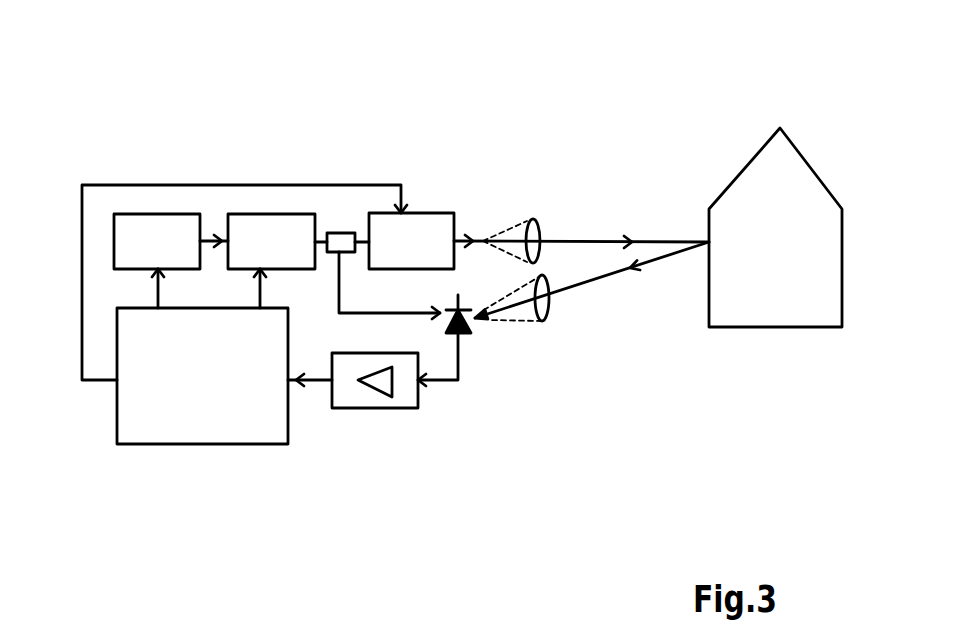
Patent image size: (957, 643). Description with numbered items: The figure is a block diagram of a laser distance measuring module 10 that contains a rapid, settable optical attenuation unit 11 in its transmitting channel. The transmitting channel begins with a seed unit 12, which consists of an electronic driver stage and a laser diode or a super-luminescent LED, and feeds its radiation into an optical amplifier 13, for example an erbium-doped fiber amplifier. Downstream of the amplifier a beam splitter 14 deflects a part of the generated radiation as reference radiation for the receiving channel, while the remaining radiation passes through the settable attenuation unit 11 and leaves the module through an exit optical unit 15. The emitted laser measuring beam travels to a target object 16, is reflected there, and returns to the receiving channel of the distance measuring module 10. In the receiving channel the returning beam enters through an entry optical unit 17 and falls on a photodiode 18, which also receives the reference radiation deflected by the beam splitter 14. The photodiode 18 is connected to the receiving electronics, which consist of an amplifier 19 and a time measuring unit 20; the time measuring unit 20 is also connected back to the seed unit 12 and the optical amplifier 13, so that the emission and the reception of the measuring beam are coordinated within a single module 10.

The laser distance measuring module 10 is at (137, 112).
The rapid attenuation unit 11 is at (440, 222).
The seed unit 12 is at (158, 237).
The optical amplifier 13 is at (290, 232).
The beam splitter 14 is at (342, 242).
The exit optical unit 15 is at (536, 224).
The target object 16 is at (773, 355).
The entry optical unit 17 is at (548, 318).
The photodiode 18 is at (468, 328).
The amplifier 19 is at (408, 401).
The time measuring unit 20 is at (213, 408).